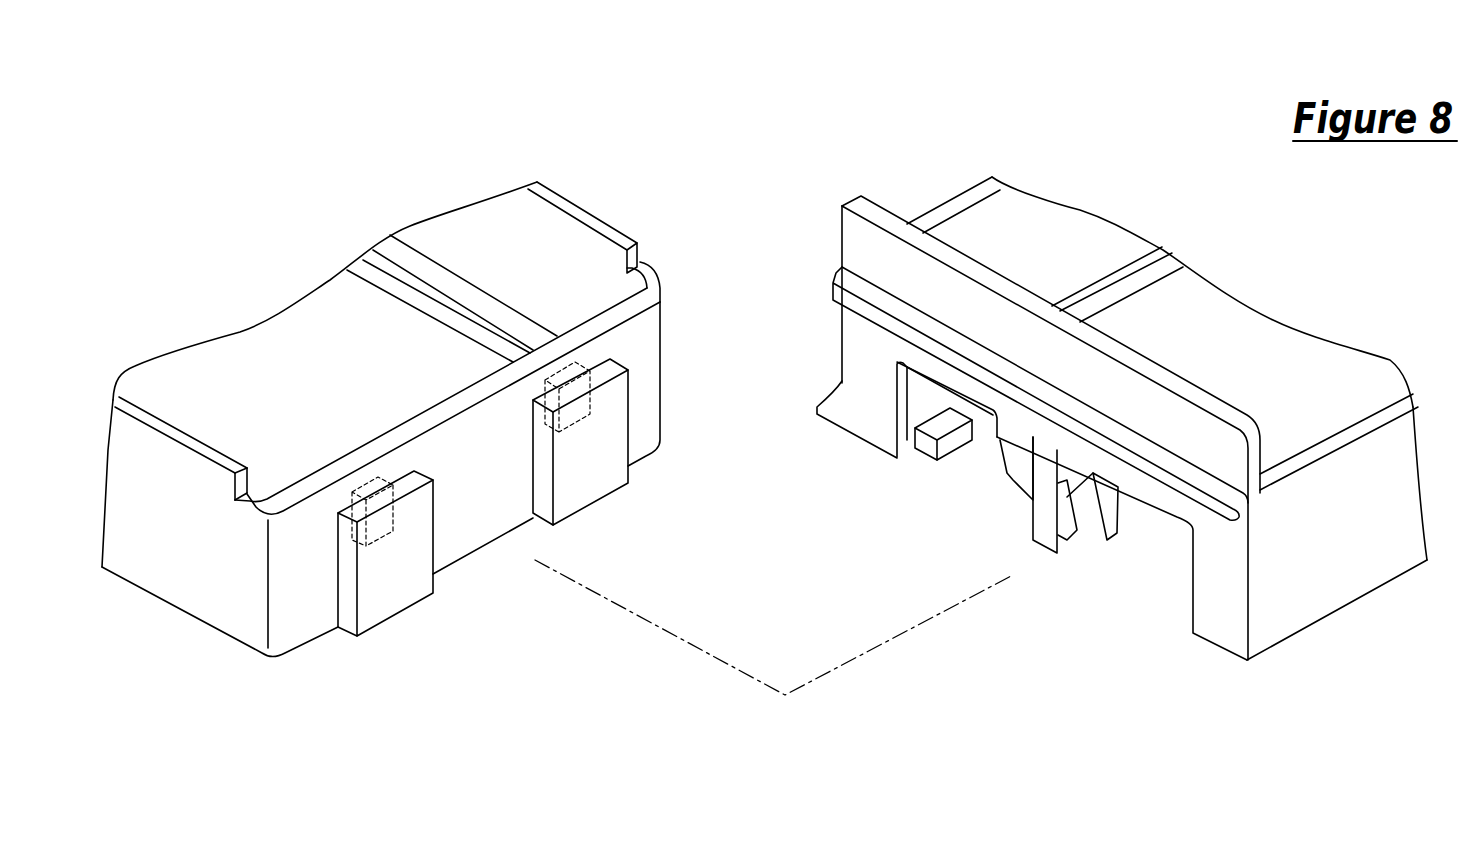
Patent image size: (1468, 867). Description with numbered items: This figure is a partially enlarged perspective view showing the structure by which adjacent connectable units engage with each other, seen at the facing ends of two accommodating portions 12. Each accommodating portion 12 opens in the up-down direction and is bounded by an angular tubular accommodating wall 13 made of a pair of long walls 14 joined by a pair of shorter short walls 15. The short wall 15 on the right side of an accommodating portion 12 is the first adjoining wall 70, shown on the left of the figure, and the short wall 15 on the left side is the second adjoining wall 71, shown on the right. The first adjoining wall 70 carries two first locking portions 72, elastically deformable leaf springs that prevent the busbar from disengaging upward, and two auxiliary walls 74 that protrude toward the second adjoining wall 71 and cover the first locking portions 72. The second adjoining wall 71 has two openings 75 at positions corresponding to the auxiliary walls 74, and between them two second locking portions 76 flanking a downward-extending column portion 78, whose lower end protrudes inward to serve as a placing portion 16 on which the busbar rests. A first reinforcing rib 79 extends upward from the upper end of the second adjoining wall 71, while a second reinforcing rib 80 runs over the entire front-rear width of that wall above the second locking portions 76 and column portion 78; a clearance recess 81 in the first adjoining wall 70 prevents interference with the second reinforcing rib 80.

The accommodating portion 12 is at (557, 228).
The accommodating wall 13 is at (940, 432).
The long wall 14 is at (157, 500).
The short wall 15 is at (691, 439).
The placing portion 16 is at (1067, 537).
The first adjoining wall 70 is at (650, 320).
The second adjoining wall 71 is at (1005, 439).
The first locking portion 72 is at (410, 480).
The auxiliary wall 74 is at (392, 582).
The opening 75 is at (902, 405).
The second locking portion 76 is at (1015, 473).
The column portion 78 is at (1043, 513).
The first reinforcing rib 79 is at (890, 243).
The second reinforcing rib 80 is at (840, 290).
The clearance recess 81 is at (253, 503).